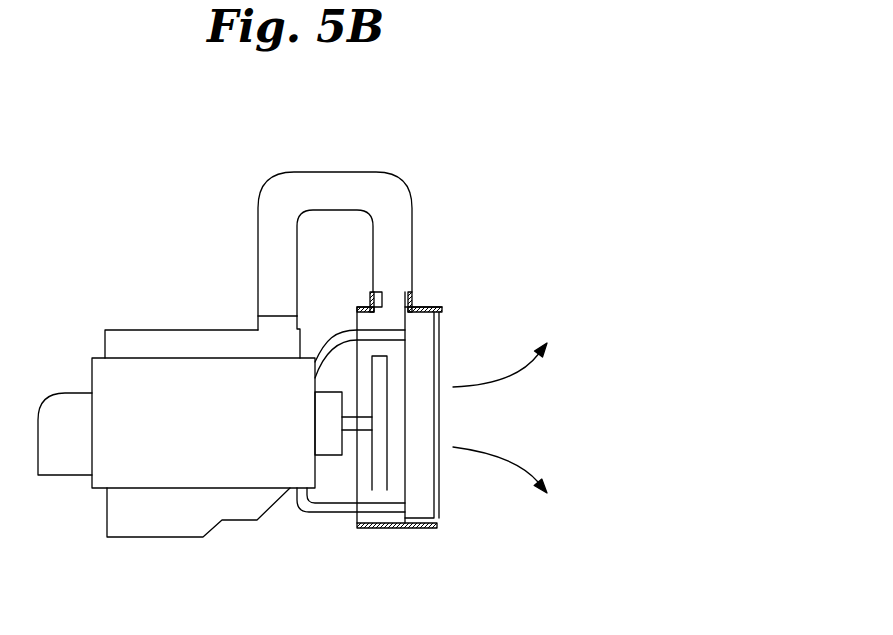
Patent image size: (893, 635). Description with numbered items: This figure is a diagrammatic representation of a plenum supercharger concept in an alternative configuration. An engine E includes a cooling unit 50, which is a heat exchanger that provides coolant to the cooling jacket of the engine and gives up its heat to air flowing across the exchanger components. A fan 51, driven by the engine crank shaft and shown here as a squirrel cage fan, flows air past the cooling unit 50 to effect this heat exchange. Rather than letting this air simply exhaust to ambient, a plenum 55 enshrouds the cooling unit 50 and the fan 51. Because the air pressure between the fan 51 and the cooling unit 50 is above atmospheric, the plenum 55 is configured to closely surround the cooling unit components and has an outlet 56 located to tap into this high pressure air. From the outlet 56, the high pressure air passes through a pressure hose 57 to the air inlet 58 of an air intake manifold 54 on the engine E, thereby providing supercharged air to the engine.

The cooling unit 50 is at (420, 508).
The fan 51 is at (375, 487).
The air intake manifold 54 is at (118, 335).
The plenum 55 is at (346, 534).
The outlet 56 is at (413, 297).
The pressure hose 57 is at (318, 187).
The air inlet 58 is at (258, 323).
The engine E is at (103, 475).